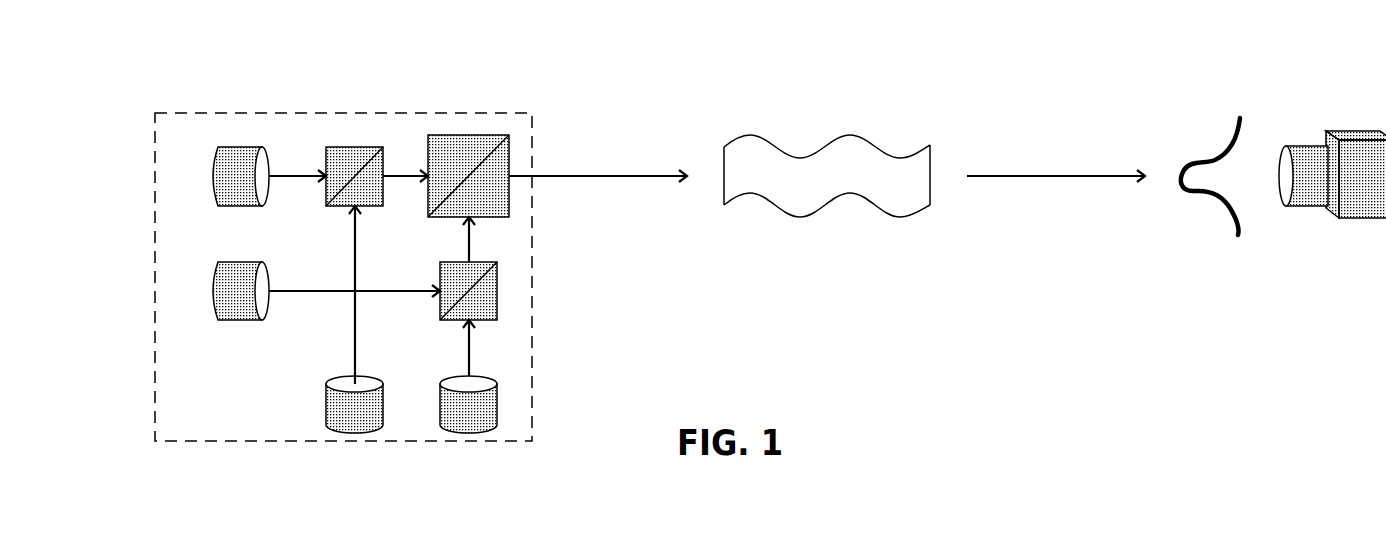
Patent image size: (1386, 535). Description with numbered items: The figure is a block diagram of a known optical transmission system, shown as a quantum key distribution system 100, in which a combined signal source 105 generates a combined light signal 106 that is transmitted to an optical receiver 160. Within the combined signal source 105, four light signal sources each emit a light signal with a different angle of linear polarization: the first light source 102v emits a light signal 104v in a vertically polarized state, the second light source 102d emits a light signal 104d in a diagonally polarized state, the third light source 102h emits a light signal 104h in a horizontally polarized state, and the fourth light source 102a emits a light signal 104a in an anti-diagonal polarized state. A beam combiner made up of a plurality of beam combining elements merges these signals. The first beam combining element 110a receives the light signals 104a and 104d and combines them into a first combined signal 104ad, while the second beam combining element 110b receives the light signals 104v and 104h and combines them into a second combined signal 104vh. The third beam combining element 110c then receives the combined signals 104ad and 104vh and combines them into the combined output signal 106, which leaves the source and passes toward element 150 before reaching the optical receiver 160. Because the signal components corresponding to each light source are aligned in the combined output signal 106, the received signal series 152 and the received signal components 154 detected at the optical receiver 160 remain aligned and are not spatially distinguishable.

The quantum key distribution system 100 is at (243, 62).
The fourth light source 102a is at (213, 160).
The third light source 102h is at (212, 285).
The second light source 102d is at (325, 392).
The first light source 102v is at (502, 390).
The light signal 104a is at (298, 172).
The light signal 104h is at (288, 292).
The light signal 104d is at (360, 318).
The light signal 104v is at (475, 346).
The first combined signal 104ad is at (412, 172).
The second combined signal 104vh is at (473, 235).
The combined signal source 105 is at (535, 327).
The combined light signal 106 is at (587, 172).
The first beam combining element 110a is at (363, 145).
The second beam combining element 110b is at (500, 280).
The third beam combining element 110c is at (495, 132).
The sample 150 is at (828, 143).
The received signal series 152 is at (1020, 173).
The received signal components 154 is at (1208, 160).
The optical receiver 160 is at (1356, 125).